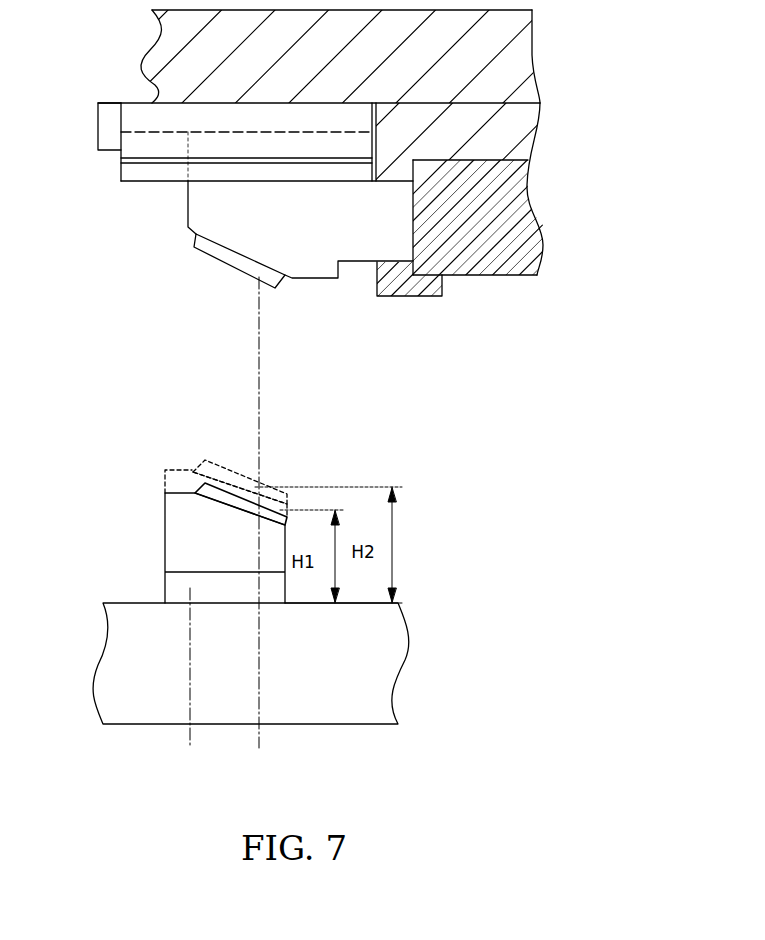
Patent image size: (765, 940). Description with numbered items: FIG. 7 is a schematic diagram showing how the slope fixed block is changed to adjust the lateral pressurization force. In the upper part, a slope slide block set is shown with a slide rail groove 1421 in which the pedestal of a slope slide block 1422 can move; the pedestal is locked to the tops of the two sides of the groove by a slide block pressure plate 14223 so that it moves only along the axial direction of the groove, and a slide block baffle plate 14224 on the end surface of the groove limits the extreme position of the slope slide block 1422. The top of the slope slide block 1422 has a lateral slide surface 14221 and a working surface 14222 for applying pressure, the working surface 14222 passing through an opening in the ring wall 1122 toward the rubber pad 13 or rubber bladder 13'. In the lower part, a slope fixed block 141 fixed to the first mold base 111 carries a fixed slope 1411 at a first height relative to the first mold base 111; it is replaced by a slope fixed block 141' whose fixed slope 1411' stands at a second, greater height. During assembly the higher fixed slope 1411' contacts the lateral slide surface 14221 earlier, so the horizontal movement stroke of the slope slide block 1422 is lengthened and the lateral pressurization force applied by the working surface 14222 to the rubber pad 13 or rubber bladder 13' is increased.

The rubber pad 13 is at (337, 187).
The rubber bladder 13' is at (461, 199).
The slide rail groove 1421 is at (168, 114).
The slide block baffle plate 14224 is at (101, 120).
The slide block pressure plate 14223 is at (143, 172).
The slope slide block 1422 is at (186, 187).
The lateral slide surface 14221 is at (235, 272).
The ring wall 1122 is at (412, 299).
The working surface 14222 is at (413, 238).
The slope fixed block 141 is at (197, 517).
The slope fixed block 141' is at (204, 440).
The fixed slope 1411 is at (241, 467).
The fixed slope 1411' is at (266, 458).
The first mold base 111 is at (336, 724).